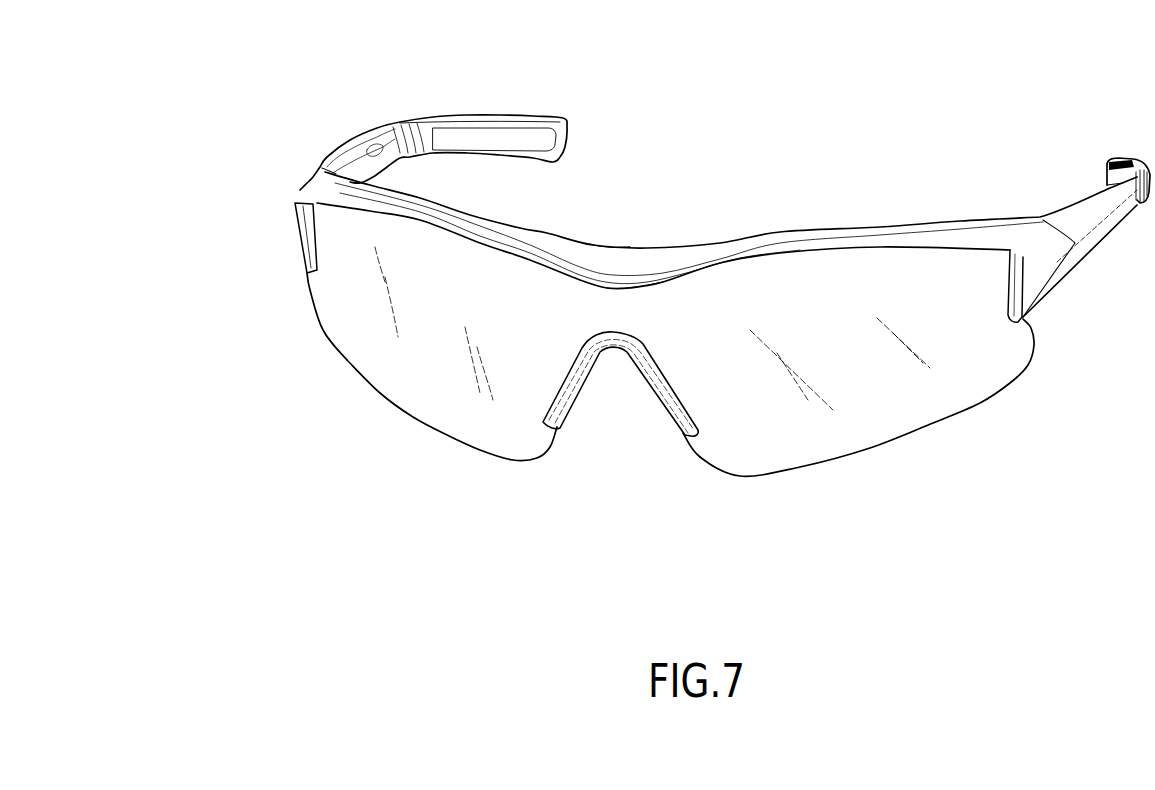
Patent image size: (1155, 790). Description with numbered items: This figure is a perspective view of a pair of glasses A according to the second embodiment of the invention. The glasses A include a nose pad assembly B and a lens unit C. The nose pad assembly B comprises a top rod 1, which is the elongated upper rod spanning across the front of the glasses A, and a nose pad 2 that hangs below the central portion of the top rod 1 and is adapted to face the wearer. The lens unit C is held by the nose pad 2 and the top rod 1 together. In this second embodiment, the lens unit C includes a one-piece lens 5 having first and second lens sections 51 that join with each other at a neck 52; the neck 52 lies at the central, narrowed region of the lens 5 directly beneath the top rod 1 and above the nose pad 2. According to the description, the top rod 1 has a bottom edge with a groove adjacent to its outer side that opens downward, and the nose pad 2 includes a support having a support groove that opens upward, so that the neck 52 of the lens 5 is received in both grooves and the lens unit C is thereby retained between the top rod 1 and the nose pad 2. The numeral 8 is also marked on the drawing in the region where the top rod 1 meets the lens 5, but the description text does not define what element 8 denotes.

The pair of glasses A is at (885, 137).
The top rod 1 is at (902, 213).
The nose pad assembly B is at (605, 285).
The engaging portion 8 is at (633, 240).
The one-piece lens 5 is at (347, 390).
The first and second lens sections 51 is at (333, 337).
The neck 52 is at (617, 313).
The lens unit C is at (377, 437).
The nose pad 2 is at (587, 395).